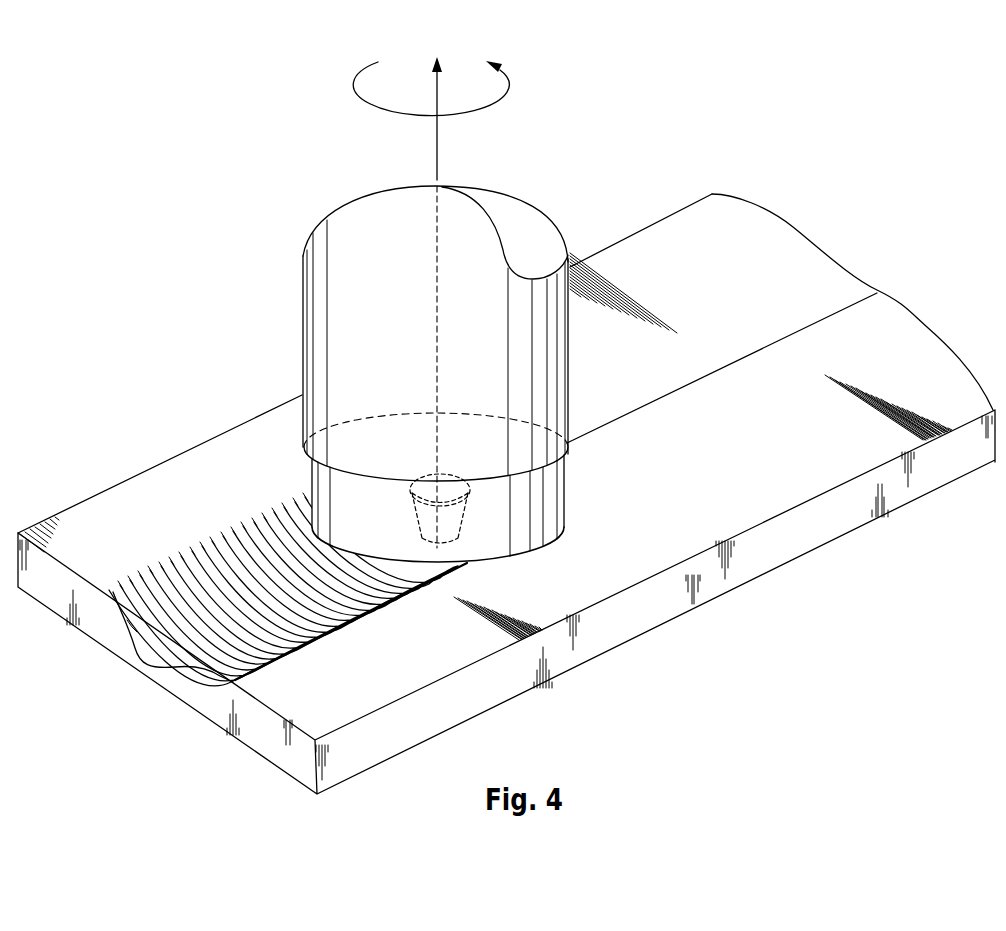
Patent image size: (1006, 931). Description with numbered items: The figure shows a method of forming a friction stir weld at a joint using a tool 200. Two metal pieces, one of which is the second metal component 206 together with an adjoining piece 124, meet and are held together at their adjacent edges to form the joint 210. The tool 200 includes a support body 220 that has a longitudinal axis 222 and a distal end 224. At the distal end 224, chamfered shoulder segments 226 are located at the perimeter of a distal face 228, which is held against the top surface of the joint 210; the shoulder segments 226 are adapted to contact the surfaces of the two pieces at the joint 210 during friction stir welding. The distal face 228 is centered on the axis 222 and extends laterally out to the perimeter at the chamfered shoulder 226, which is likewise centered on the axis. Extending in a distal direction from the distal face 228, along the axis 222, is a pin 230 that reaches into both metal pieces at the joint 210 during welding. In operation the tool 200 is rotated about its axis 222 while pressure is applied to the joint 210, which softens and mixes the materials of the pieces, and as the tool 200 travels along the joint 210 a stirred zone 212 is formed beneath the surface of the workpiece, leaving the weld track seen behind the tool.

The tool 200 is at (283, 325).
The support body 220 is at (382, 248).
The longitudinal axis 222 is at (431, 290).
The distal end 224 is at (243, 472).
The first workpiece 124 is at (753, 289).
The second metal component 206 is at (793, 422).
The joint 210 is at (862, 303).
The stirred zone 212 is at (160, 650).
The chamfered shoulder segments 226 is at (566, 528).
The distal face 228 is at (574, 560).
The pin 230 is at (457, 513).